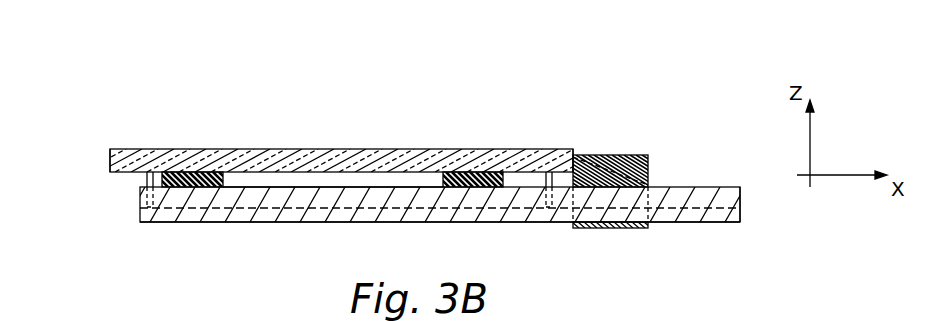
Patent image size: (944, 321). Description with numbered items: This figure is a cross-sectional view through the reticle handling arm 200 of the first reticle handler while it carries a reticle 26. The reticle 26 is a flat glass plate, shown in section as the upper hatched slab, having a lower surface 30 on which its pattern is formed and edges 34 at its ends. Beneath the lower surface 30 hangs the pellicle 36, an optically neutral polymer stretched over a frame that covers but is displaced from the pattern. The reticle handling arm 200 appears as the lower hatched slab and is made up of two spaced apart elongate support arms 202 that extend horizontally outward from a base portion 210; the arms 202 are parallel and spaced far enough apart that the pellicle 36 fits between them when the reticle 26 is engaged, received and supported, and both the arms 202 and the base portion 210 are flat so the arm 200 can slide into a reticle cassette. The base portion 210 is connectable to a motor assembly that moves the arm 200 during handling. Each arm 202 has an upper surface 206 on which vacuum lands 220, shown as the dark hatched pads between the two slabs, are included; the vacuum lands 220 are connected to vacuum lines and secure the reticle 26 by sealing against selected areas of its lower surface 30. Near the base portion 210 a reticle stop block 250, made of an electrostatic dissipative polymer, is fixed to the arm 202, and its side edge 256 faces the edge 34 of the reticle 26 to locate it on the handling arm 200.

The reticle 26 is at (391, 150).
The lower surface 30 is at (112, 173).
The edges 34 is at (602, 184).
The pellicle 36 is at (425, 208).
The reticle handling arm 200 is at (704, 188).
The elongate support arms 202 is at (327, 223).
The upper surface 206 is at (267, 188).
The base portion 210 is at (727, 207).
The vacuum lands 220 is at (201, 172).
The reticle stop blocks 250 is at (619, 156).
The side edge 256 is at (563, 150).